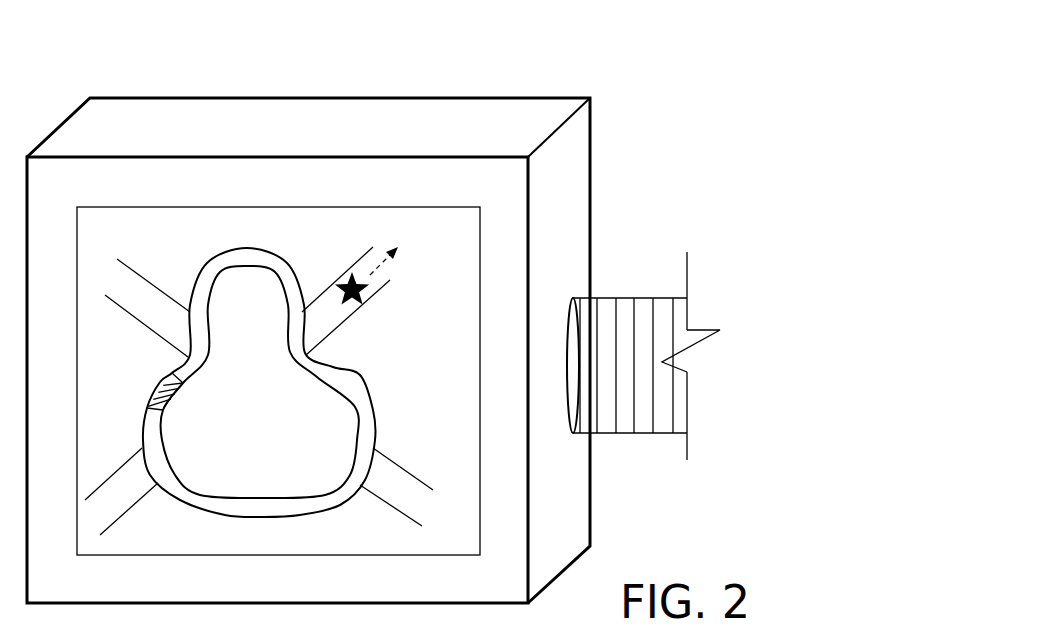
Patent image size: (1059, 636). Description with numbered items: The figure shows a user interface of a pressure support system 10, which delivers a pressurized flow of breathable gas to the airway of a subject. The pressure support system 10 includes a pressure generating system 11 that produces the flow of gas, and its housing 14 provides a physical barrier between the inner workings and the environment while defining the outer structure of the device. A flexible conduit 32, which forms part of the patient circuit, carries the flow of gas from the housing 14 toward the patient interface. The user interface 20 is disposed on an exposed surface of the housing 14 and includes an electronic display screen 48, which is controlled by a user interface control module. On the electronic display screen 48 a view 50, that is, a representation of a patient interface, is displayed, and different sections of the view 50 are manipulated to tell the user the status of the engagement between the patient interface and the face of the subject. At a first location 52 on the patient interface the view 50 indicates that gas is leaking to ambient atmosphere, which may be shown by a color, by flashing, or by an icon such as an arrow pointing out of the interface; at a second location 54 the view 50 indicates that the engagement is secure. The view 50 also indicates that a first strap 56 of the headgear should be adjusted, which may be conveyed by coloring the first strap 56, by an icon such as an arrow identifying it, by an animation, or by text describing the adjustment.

The pressure support system 10 is at (694, 159).
The pressure generating system 11 is at (419, 67).
The housing 14 is at (521, 118).
The user interface 20 is at (240, 207).
The flexible conduit 32 is at (624, 300).
The electronic display screen 48 is at (441, 226).
The view 50 is at (213, 265).
The first location 52 is at (155, 391).
The second location 54 is at (352, 392).
The first strap 56 is at (374, 293).